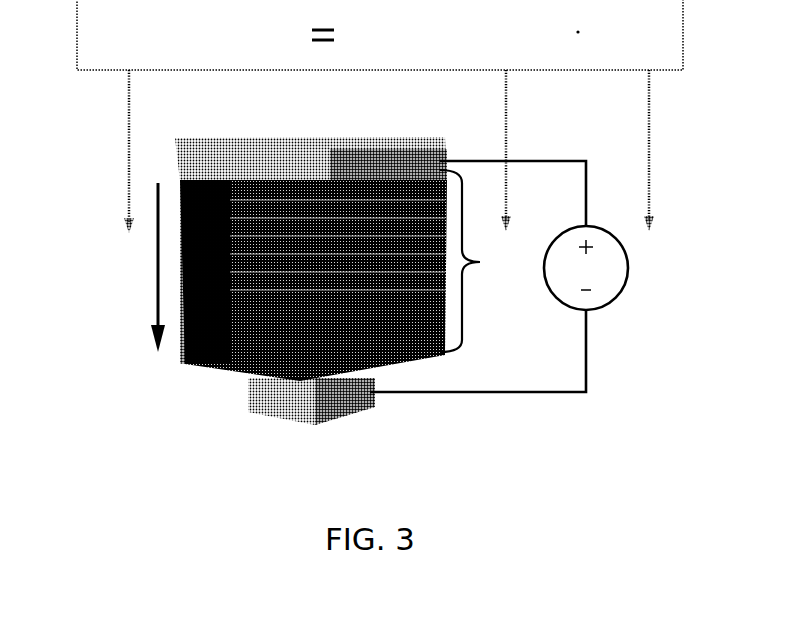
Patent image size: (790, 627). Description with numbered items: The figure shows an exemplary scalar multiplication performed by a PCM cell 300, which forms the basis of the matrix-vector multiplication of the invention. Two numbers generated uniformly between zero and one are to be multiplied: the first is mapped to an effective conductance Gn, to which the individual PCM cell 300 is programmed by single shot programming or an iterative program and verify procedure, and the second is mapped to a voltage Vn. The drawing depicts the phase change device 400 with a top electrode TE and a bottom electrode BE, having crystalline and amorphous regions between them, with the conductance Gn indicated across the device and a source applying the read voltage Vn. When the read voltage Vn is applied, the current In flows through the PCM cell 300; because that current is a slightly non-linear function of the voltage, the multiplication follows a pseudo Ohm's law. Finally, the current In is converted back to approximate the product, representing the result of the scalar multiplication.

The PCM cell 300 is at (373, 261).
The phase change memory device with crystalline and amorphous regions 400 is at (190, 316).
The top electrode TE is at (311, 160).
The bottom electrode BE is at (311, 401).
The current In is at (139, 267).
The effective conductance Gn is at (479, 261).
The voltage Vn is at (606, 268).